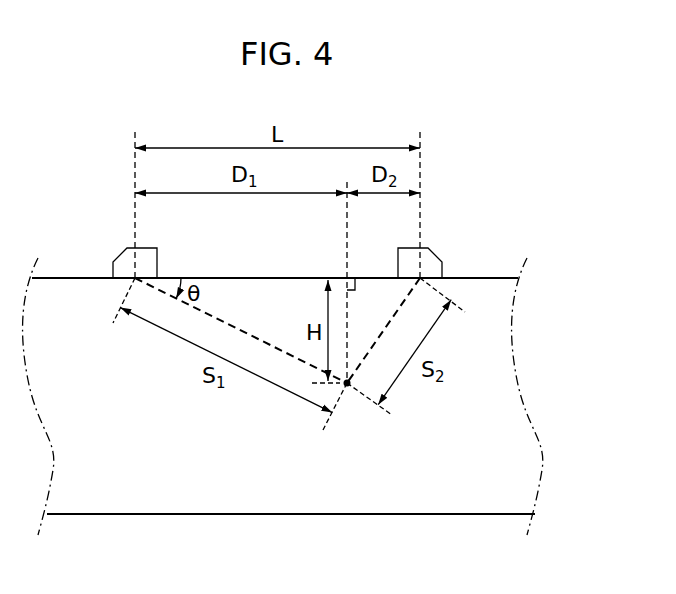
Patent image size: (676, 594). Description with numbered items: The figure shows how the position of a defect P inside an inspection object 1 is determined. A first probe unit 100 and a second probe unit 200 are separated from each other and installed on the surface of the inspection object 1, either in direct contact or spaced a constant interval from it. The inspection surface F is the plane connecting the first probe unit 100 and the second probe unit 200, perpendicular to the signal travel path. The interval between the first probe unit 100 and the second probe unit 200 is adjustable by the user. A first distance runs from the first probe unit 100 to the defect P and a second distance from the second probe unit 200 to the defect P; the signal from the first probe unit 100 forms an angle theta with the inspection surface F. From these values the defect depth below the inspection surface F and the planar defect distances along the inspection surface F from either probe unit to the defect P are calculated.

The first probe unit 100 is at (120, 263).
The second probe unit 200 is at (440, 258).
The inspection object 1 is at (407, 502).
The inspection surface F is at (262, 278).
The defect P is at (347, 387).